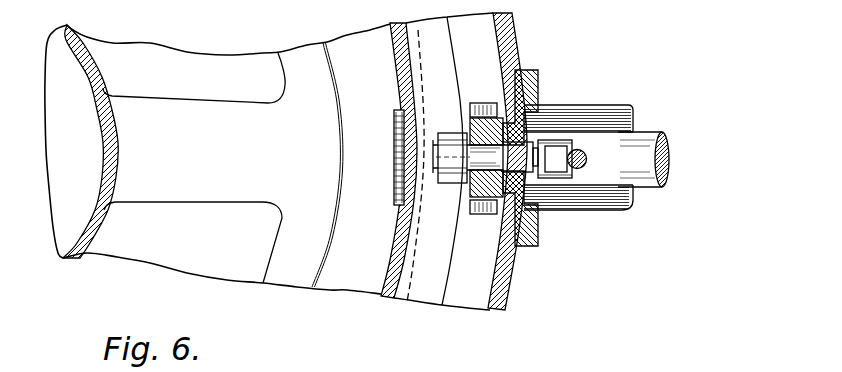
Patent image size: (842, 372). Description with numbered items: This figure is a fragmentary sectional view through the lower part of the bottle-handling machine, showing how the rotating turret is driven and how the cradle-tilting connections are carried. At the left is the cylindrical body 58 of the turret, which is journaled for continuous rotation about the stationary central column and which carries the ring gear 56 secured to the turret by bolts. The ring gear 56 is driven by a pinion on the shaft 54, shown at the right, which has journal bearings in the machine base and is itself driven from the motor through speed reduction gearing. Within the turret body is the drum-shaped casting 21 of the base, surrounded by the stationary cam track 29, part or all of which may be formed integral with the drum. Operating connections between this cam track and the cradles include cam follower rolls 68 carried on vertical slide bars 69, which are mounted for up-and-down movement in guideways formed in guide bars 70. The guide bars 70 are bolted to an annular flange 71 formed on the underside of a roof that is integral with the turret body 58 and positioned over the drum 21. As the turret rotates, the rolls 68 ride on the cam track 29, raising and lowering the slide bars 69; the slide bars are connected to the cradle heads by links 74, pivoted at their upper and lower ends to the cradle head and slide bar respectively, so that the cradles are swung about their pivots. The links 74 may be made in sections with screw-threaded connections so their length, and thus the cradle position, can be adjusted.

The cylindrical body 58 is at (99, 81).
The ring gear 56 is at (341, 280).
The drum-shaped casting 21 is at (393, 293).
The stationary cam track 29 is at (426, 293).
The annular flange 71 is at (512, 267).
The guide bars 70 is at (538, 90).
The cam follower rolls 68 is at (451, 137).
The vertical slide bars 69 is at (488, 128).
The links 74 is at (581, 154).
The shaft 54 is at (653, 151).